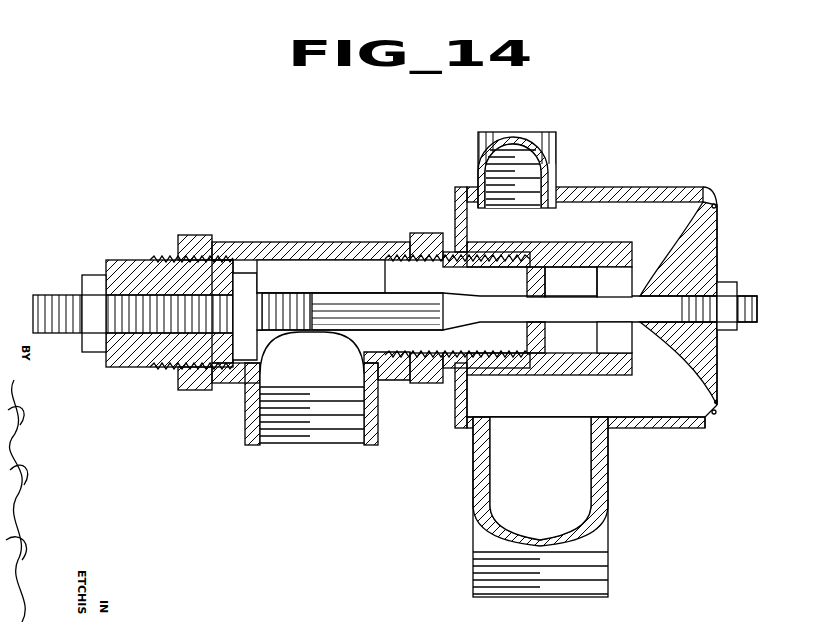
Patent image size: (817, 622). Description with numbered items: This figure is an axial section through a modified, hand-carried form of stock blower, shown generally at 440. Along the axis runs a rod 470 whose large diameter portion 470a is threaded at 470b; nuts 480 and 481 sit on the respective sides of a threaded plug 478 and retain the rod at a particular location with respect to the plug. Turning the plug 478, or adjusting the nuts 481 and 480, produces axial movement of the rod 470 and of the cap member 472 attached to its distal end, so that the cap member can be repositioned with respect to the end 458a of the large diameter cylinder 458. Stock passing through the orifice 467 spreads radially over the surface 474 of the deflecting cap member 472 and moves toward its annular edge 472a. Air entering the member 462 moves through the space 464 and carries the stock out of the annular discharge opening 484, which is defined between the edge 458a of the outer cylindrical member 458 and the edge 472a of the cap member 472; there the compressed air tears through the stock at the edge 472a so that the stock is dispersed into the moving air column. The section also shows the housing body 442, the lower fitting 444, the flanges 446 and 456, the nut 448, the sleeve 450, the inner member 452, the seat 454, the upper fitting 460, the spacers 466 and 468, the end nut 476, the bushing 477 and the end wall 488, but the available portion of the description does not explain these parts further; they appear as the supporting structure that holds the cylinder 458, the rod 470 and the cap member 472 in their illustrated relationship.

The coupling assembly 440 is at (333, 240).
The housing 442 is at (240, 245).
The lower fitting 444 is at (364, 436).
The flange 446 is at (190, 243).
The threaded nut 448 is at (436, 233).
The sleeve 450 is at (385, 268).
The inner tubular member 452 is at (553, 247).
The seat 454 is at (632, 244).
The end flange 456 is at (455, 198).
The large diameter cylinder 458 is at (590, 187).
The end of the large diameter cylinder 458a is at (712, 208).
The upper pipe fitting 460 is at (540, 134).
The member 462 is at (606, 472).
The space 464 is at (614, 413).
The upper spacer 466 is at (530, 271).
The orifice 467 is at (530, 330).
The lower spacer 468 is at (538, 338).
The rod 470 is at (582, 302).
The large diameter portion of the rod 470a is at (345, 322).
The threaded portion of the rod 470b is at (60, 298).
The cap member 472 is at (710, 232).
The annular edge of the cap member 472a is at (717, 402).
The surface of the deflecting cap member 474 is at (695, 364).
The end nut 476 is at (730, 328).
The threaded bushing 477 is at (124, 298).
The threaded plug 478 is at (153, 366).
The nut 480 is at (251, 292).
The nut 481 is at (92, 346).
The annular discharge opening 484 is at (714, 207).
The end wall 488 is at (718, 253).